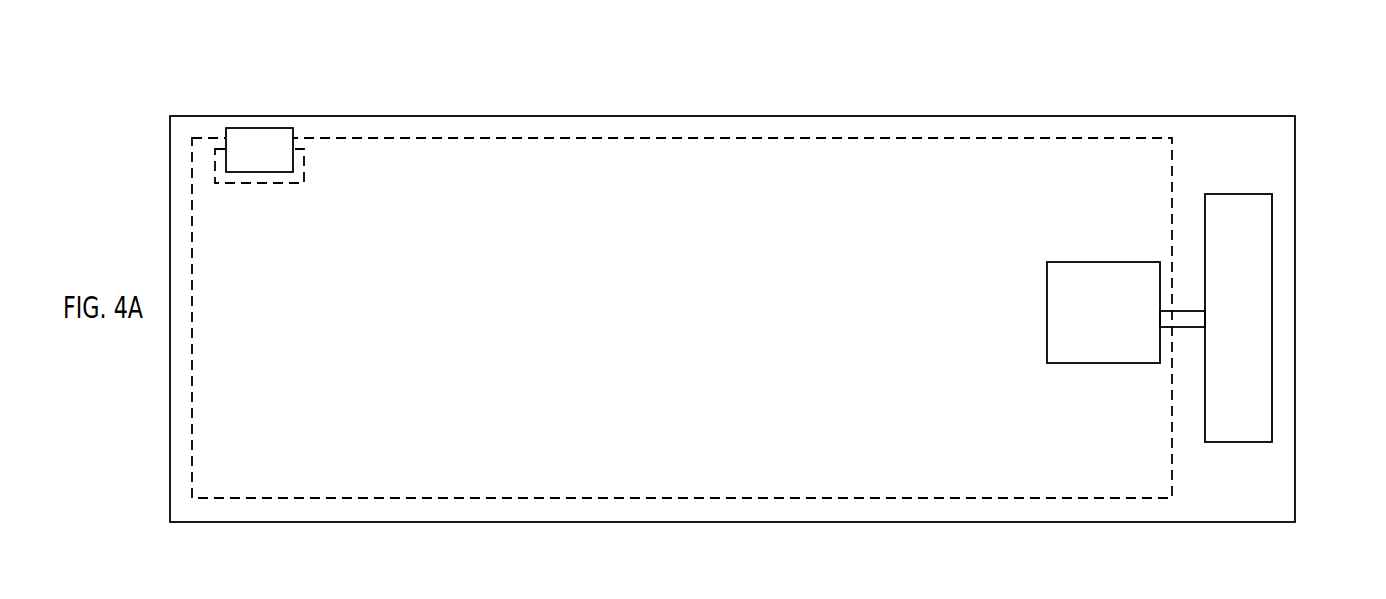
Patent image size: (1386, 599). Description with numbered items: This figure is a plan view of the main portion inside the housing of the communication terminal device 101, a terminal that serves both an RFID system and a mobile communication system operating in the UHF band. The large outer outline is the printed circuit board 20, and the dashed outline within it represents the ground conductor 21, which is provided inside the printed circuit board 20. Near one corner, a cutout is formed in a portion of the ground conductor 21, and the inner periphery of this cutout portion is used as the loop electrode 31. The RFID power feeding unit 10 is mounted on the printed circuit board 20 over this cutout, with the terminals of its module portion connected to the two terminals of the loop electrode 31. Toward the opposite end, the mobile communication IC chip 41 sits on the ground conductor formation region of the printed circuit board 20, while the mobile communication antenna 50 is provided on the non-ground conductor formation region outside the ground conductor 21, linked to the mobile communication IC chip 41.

The communication terminal device 101 is at (1233, 45).
The printed circuit board 20 is at (1295, 116).
The ground conductor 21 is at (728, 170).
The loop electrode 31 is at (302, 140).
The RFID power feeding unit 10 is at (262, 138).
The mobile communication IC chip 41 is at (1102, 283).
The mobile communication antenna 50 is at (1253, 314).